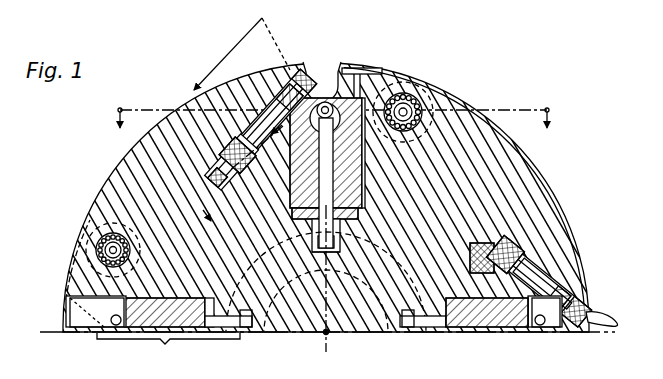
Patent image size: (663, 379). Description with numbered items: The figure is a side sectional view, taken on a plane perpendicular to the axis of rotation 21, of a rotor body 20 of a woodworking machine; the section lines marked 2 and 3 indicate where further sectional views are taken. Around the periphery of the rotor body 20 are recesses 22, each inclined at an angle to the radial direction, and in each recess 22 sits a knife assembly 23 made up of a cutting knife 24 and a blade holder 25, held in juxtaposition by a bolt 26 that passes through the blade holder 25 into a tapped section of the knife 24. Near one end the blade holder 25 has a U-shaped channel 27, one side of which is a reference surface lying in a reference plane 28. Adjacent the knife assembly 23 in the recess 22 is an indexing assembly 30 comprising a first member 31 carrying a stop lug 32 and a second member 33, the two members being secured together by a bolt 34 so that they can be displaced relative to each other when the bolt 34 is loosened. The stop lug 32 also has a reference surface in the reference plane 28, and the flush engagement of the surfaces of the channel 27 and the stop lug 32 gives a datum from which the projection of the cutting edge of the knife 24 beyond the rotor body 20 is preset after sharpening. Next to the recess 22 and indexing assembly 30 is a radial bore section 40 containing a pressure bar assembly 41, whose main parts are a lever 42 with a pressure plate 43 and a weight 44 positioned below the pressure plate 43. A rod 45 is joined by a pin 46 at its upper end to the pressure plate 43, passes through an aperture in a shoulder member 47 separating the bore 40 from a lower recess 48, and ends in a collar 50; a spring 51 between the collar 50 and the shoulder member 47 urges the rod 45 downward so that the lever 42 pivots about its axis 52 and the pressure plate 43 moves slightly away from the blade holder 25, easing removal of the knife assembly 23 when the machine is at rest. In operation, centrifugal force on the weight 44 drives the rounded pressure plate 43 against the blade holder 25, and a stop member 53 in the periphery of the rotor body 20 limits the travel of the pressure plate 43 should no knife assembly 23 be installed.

The rotor body 20 is at (331, 189).
The axis of rotation 21 is at (326, 330).
The recess 22 is at (248, 106).
The knife assembly 23 is at (650, 325).
The cutting knife 24 is at (312, 100).
The blade holder 25 is at (320, 86).
The bolt 26 is at (276, 96).
The U-shaped channel 27 is at (504, 242).
The reference plane 28 is at (192, 92).
The indexing assembly 30 is at (256, 182).
The first member 31 is at (254, 160).
The stop lug 32 is at (232, 146).
The second member 33 is at (232, 164).
The bolt 34 is at (226, 190).
The bore section 40 is at (352, 152).
The pressure bar assembly 41 is at (188, 372).
The lever 42 is at (418, 84).
The pressure plate 43 is at (358, 74).
The weight 44 is at (365, 186).
The rod 45 is at (356, 212).
The pin 46 is at (314, 311).
The shoulder member 47 is at (340, 232).
The recess 48 is at (343, 253).
The collar 50 is at (312, 258).
The spring 51 is at (302, 232).
The axis 52 is at (420, 100).
The stop member 53 is at (372, 70).
The section line 2- 2 is at (333, 107).
The section line 3- 3 is at (232, 165).